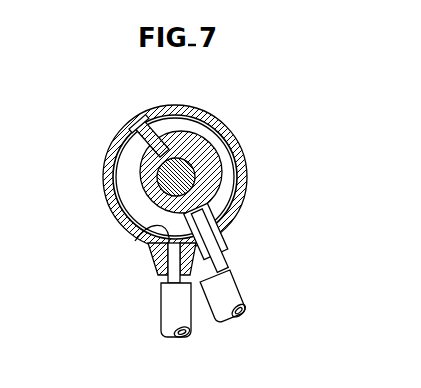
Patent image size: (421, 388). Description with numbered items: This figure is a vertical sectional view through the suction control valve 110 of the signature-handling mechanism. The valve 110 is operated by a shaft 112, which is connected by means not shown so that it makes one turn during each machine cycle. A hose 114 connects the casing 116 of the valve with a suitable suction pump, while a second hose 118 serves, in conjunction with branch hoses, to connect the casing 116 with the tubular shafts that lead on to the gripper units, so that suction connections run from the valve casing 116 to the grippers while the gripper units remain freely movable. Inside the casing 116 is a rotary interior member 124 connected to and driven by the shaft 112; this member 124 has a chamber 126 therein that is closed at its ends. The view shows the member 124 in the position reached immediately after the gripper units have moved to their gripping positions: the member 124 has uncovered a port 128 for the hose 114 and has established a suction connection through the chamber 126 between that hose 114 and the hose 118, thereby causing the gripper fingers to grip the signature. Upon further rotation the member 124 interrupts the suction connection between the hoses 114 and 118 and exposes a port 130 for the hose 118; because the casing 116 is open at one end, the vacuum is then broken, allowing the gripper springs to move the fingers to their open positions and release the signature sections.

The suction control valve 110 is at (115, 142).
The shaft 112 is at (158, 180).
The hose 114 is at (230, 298).
The casing 116 is at (245, 167).
The hose 118 is at (172, 300).
The rotary interior member 124 is at (233, 188).
The chamber 126 is at (131, 207).
The port 128 is at (233, 223).
The port 130 is at (162, 228).